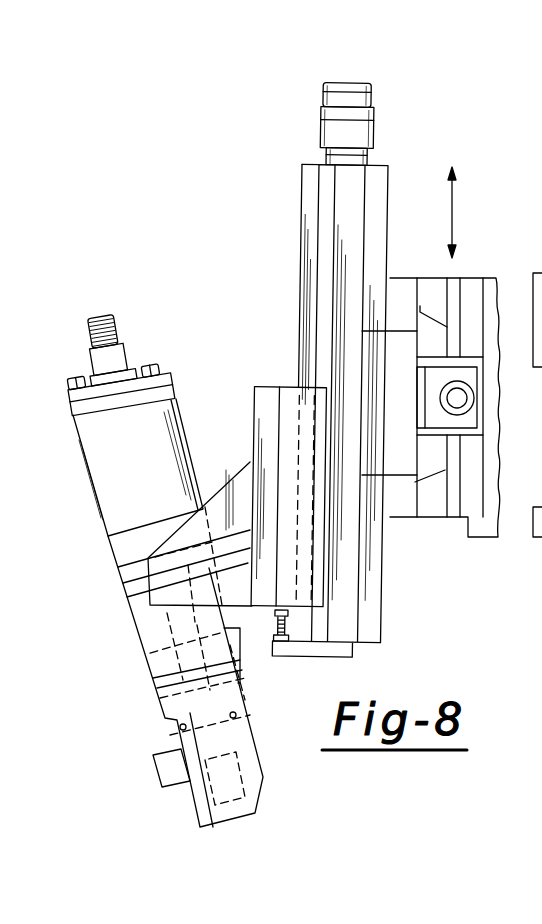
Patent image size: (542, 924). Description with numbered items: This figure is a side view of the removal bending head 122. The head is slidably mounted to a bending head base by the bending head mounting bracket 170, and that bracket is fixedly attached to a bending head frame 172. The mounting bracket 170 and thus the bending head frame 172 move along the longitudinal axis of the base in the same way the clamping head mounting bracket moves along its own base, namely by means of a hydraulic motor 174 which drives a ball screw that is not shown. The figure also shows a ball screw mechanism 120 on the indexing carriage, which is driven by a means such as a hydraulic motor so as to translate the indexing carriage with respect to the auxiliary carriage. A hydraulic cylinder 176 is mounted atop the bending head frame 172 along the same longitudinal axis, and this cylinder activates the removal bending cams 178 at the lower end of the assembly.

The ball screw mechanism 120 is at (458, 390).
The removal bending head 122 is at (389, 166).
The bending head mounting bracket 170 is at (250, 395).
The bending head frame 172 is at (145, 614).
The hydraulic motor 174 is at (337, 92).
The hydraulic cylinder 176 is at (185, 438).
The removal bending cams 178 is at (162, 772).